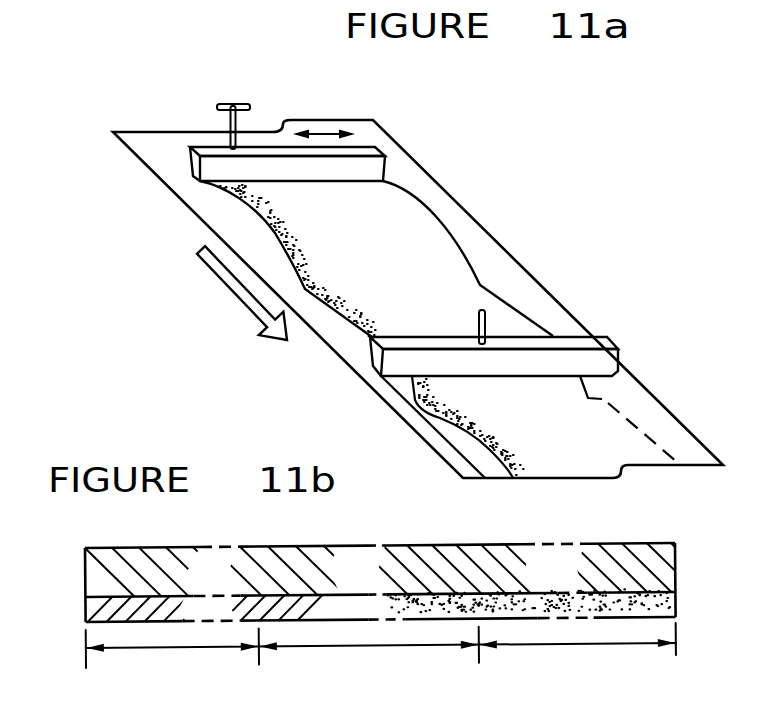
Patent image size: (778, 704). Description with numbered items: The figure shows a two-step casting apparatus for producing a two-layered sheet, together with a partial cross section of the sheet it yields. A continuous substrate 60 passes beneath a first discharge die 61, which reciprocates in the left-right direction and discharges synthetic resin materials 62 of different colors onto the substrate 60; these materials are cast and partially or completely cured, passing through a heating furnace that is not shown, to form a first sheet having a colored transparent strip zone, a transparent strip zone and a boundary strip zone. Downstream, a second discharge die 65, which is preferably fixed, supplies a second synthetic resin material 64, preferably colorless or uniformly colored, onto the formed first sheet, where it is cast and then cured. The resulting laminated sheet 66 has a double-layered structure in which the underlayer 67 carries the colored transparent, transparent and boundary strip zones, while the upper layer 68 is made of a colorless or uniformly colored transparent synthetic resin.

In FIG. 11a, the continuous substrate 60 is at (162, 162).
In FIG. 11a, the first discharge die 61 is at (370, 152).
In FIG. 11a, the synthetic resin material 62 is at (388, 208).
In FIG. 11a, the second synthetic resin material 64 is at (605, 393).
In FIG. 11a, the second discharge die 65 is at (570, 340).
In FIG. 11b, the laminated sheet 66 is at (74, 548).
In FIG. 11b, the underlayer 67 is at (680, 592).
In FIG. 11b, the upper layer 68 is at (680, 543).